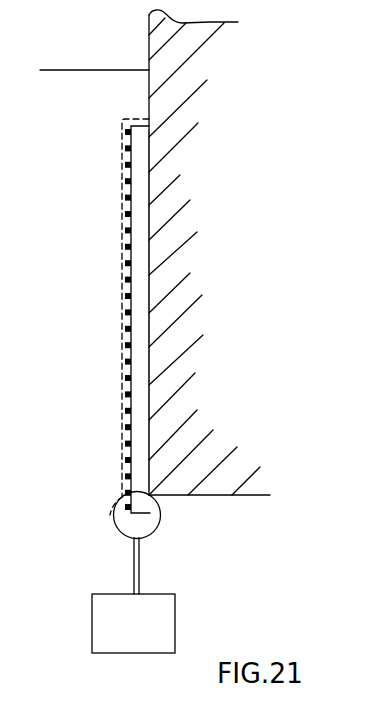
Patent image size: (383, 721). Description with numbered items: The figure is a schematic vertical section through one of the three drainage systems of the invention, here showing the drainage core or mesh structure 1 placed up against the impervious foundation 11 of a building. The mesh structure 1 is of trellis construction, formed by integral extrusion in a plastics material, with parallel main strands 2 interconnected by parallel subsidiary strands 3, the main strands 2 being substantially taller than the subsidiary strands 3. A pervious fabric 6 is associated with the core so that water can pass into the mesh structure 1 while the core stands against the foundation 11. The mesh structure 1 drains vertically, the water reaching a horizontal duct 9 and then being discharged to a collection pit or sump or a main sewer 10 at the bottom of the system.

The mesh structure 1 is at (125, 256).
The main strands 2 is at (140, 322).
The subsidiary strands 3 is at (125, 362).
The pervious fabric 6 is at (127, 195).
The horizontal duct 9 is at (147, 523).
The main sewer 10 is at (170, 618).
The impervious foundation 11 is at (170, 55).